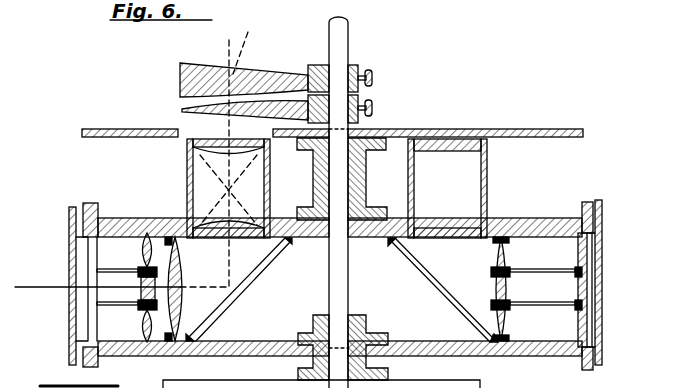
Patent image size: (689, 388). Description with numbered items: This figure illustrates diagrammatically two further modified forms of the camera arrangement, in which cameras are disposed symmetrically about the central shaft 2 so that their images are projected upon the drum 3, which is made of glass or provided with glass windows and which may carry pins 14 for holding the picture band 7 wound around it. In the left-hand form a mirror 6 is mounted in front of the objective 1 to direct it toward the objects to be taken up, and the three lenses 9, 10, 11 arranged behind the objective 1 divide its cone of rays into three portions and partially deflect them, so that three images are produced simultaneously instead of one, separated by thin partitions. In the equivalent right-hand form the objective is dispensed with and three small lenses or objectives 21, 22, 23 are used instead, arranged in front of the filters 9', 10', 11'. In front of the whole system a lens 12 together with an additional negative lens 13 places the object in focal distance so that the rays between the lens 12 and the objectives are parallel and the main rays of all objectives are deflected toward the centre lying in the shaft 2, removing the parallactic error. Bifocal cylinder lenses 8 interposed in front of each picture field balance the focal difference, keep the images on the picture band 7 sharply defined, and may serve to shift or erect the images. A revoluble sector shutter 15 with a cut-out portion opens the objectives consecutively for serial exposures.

The objective 1 is at (182, 262).
The shaft 2 is at (340, 30).
The drum 3 is at (590, 310).
The mirror 6 is at (238, 282).
The picture band 7 is at (70, 268).
The cylindrical lens 8 is at (250, 152).
The lens 9 is at (133, 250).
The lens 10 is at (127, 288).
The lens 11 is at (127, 326).
The lens 12 is at (192, 109).
The negative lens 13 is at (267, 77).
The pins 14 is at (80, 226).
The revoluble shutter 15 is at (112, 129).
The lens 21 is at (495, 252).
The lens 22 is at (495, 282).
The lens 23 is at (495, 318).
The filter 9' is at (606, 290).
The filter 10' is at (615, 294).
The filter 11' is at (615, 336).